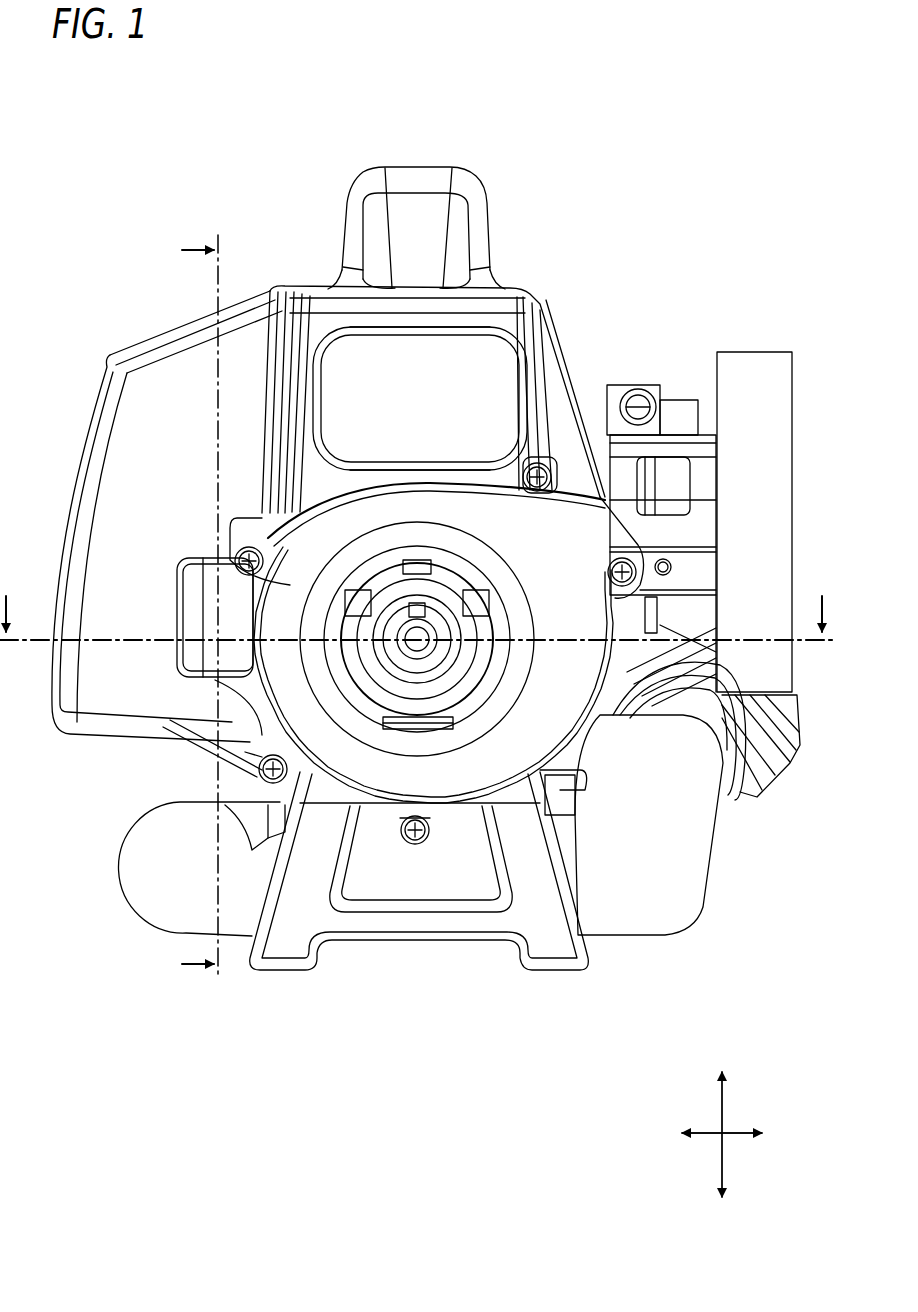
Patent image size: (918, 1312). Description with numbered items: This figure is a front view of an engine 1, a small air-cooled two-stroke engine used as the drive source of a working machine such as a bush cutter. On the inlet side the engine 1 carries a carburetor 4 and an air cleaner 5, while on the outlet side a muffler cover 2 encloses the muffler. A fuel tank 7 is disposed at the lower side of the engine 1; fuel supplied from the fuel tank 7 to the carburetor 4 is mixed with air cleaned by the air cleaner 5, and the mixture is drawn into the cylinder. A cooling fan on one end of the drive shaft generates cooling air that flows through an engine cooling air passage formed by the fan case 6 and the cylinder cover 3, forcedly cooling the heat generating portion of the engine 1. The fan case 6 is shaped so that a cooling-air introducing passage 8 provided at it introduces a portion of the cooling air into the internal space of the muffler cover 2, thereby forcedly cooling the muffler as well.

The engine 1 is at (216, 162).
The muffler cover 2 is at (118, 356).
The cylinder cover 3 is at (513, 287).
The carburetor 4 is at (677, 407).
The air cleaner 5 is at (752, 358).
The fan case 6 is at (565, 740).
The fuel tank 7 is at (695, 883).
The cooling-air introducing passage 8 is at (213, 680).